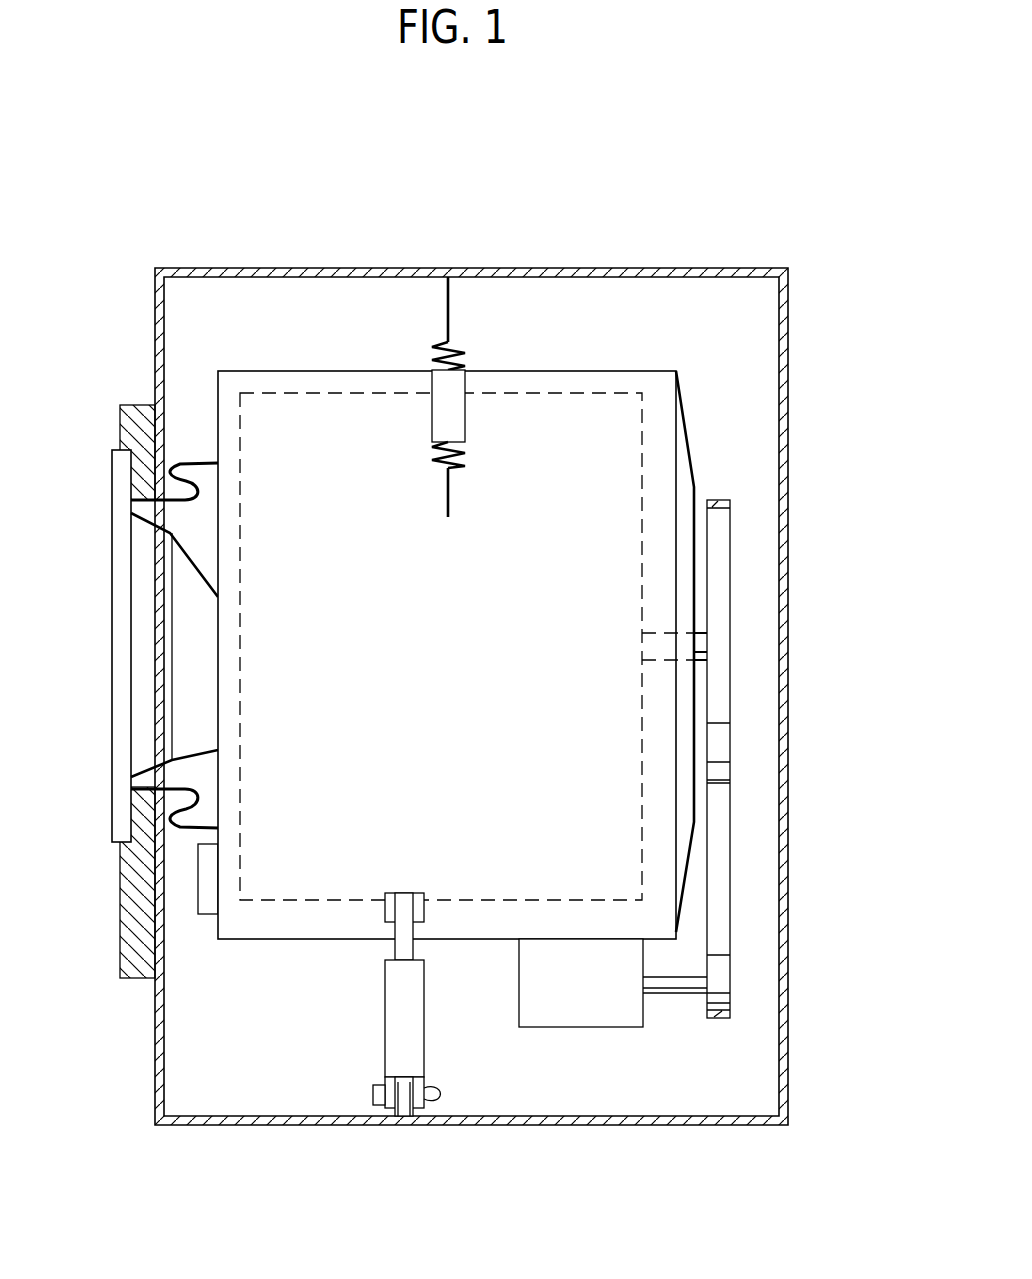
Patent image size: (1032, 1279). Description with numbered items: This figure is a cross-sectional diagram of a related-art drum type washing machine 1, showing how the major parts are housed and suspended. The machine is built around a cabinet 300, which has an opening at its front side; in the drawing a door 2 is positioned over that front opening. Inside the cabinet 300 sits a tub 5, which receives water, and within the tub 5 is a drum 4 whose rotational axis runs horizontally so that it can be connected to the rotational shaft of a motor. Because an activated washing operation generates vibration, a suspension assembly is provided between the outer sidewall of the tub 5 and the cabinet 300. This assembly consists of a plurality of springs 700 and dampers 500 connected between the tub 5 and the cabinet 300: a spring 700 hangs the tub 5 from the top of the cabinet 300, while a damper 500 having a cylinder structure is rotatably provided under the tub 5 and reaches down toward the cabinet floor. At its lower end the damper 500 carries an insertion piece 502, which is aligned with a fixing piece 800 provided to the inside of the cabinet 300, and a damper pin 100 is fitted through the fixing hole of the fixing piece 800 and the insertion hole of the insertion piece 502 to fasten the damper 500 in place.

The washing machine 1 is at (663, 222).
The door 2 is at (121, 645).
The drum 4 is at (326, 393).
The tub 5 is at (256, 371).
The damper pin 100 is at (373, 1090).
The cabinet 300 is at (788, 443).
The damper 500 is at (395, 1017).
The insertion piece 502 is at (397, 1117).
The spring 700 is at (465, 357).
The fixing piece 800 is at (415, 1117).